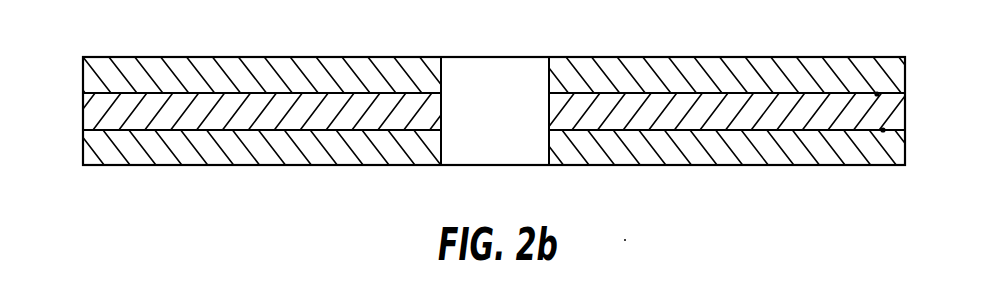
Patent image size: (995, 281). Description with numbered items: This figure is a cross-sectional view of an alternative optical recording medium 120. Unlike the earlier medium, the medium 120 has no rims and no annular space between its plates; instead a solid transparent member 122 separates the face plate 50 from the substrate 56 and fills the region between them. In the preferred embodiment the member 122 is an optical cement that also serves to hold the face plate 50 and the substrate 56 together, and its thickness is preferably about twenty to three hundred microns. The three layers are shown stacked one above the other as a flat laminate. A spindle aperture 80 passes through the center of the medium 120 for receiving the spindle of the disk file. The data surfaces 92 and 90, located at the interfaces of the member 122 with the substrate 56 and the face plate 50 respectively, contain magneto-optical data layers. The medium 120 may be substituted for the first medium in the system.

The optical recording medium 120 is at (172, 183).
The substrate 56 is at (83, 69).
The solid transparent member 122 is at (83, 111).
The face plate 50 is at (83, 153).
The spindle aperture 80 is at (500, 118).
The data surface 92 is at (877, 94).
The data surface 90 is at (883, 130).